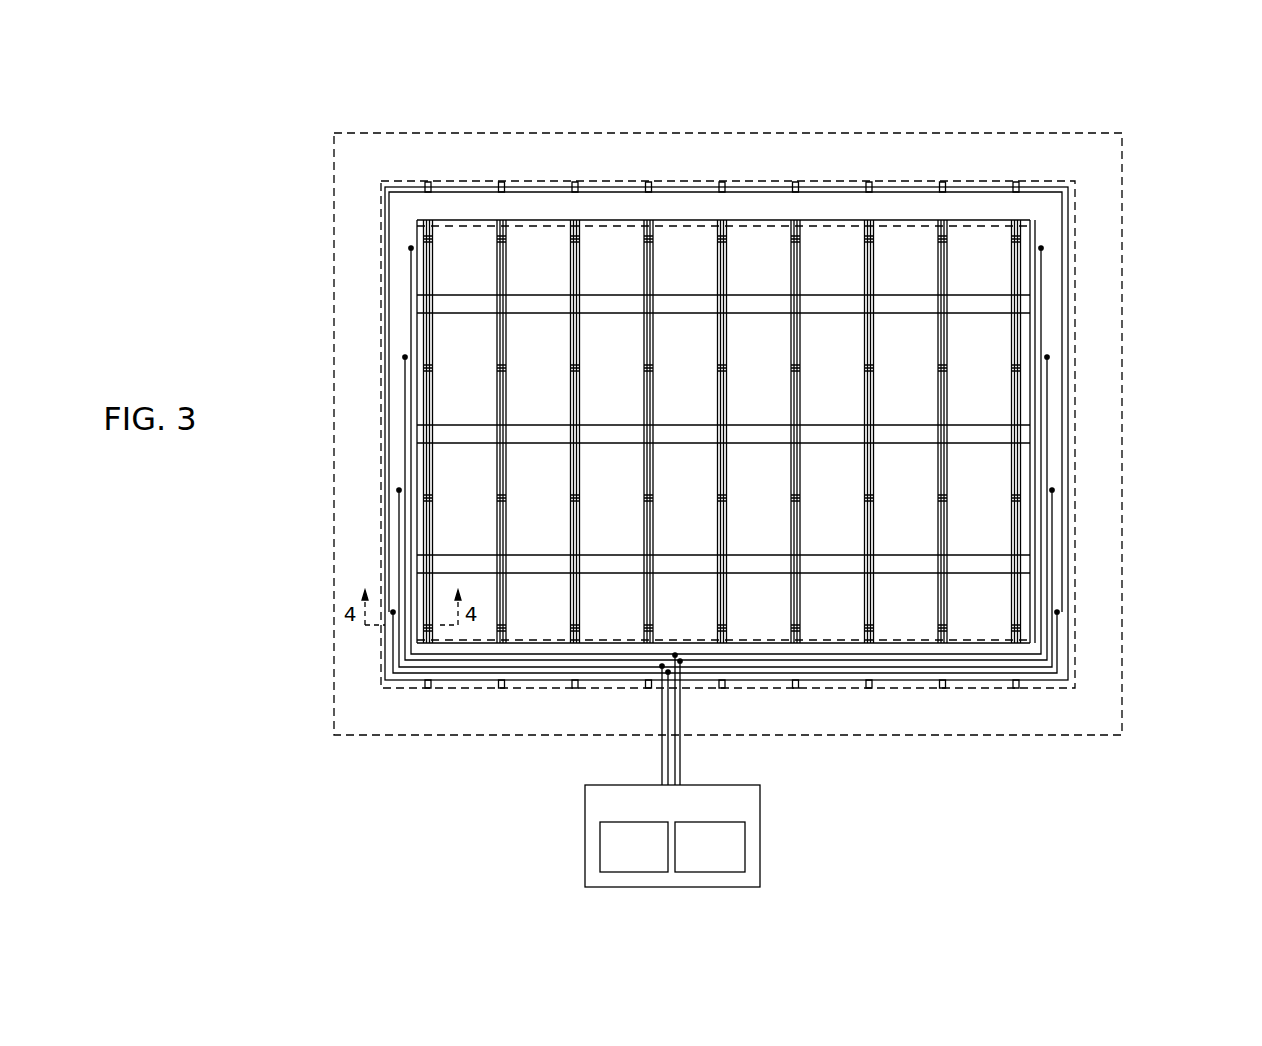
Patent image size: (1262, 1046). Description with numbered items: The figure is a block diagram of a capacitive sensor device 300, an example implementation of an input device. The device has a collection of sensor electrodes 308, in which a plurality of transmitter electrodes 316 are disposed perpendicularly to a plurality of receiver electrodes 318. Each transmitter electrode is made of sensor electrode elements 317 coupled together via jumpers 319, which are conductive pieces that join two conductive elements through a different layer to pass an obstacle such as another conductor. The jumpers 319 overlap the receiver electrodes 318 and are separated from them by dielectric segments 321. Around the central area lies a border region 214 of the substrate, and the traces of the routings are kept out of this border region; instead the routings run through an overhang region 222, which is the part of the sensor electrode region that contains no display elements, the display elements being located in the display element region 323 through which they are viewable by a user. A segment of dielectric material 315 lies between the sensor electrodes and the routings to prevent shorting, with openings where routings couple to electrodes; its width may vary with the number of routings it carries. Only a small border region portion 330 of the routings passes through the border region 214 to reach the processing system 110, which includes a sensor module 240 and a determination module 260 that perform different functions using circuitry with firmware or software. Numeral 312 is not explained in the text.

The capacitive sensor device 300 is at (326, 100).
The overhang region 222 is at (887, 142).
The border region 214 is at (548, 150).
The edge region 312 is at (337, 293).
The collection of sensor electrodes 308 is at (368, 180).
The segment of dielectric material 315 is at (999, 186).
The display element region 323 is at (1022, 262).
The sensor electrode elements 317 is at (430, 182).
The jumpers 319 is at (500, 232).
The dielectric segments 321 is at (426, 232).
The receiver electrodes 318 is at (428, 690).
The transmitter electrodes 316 is at (384, 247).
The border region portion 330 is at (689, 700).
The processing system 110 is at (690, 814).
The sensor module 240 is at (652, 858).
The determination module 260 is at (728, 858).